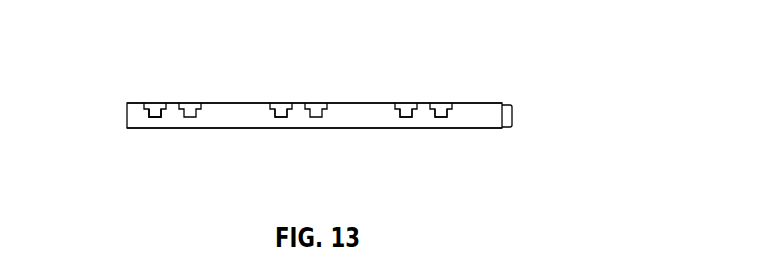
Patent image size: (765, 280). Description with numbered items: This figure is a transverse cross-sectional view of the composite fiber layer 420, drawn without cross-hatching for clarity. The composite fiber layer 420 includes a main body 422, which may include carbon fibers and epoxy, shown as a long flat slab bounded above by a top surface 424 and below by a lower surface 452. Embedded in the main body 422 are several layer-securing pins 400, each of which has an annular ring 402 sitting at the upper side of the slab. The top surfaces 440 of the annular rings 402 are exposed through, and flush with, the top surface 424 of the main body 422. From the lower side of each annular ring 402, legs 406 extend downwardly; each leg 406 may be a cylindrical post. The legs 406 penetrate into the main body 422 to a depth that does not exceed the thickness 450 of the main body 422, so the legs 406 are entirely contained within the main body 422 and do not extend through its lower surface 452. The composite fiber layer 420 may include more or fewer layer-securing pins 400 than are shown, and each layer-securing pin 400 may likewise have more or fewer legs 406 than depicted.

The layer-securing pin 400 is at (153, 118).
The annular ring 402 is at (153, 103).
The legs 406 is at (151, 112).
The composite fiber layer 420 is at (329, 103).
The main body 422 is at (363, 115).
The top surface 424 is at (353, 103).
The top surfaces 440 is at (190, 103).
The thickness 450 is at (513, 114).
The lower surface 452 is at (216, 128).